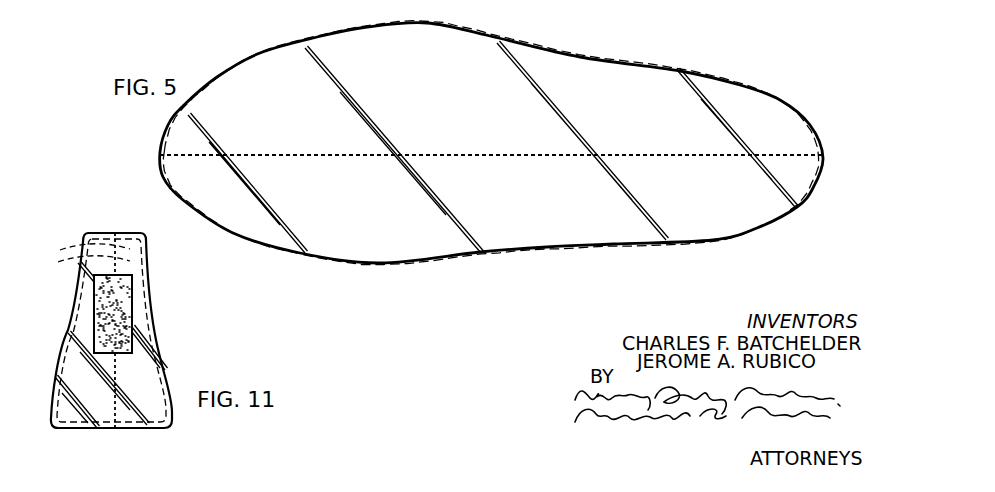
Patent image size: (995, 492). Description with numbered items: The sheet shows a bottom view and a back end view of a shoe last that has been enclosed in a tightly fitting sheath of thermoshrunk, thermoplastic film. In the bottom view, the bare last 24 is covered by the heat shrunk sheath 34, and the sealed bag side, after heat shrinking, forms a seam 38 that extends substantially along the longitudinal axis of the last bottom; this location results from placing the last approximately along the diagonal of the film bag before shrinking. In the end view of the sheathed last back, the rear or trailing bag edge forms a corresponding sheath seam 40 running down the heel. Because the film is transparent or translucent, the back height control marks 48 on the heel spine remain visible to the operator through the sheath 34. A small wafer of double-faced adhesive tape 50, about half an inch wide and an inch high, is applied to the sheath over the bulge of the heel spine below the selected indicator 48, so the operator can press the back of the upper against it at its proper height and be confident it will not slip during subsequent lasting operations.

In FIG. 5, the last 24 is at (783, 115).
In FIG. 11, the last 24 is at (76, 375).
In FIG. 5, the sheath 34 is at (738, 75).
In FIG. 11, the sheath 34 is at (71, 328).
In FIG. 5, the seam 38 is at (787, 158).
In FIG. 11, the sheath seam 40 is at (116, 411).
In FIG. 11, the back height control marks 48 is at (82, 247).
In FIG. 11, the double-faced adhesive tape wafer 50 is at (118, 308).